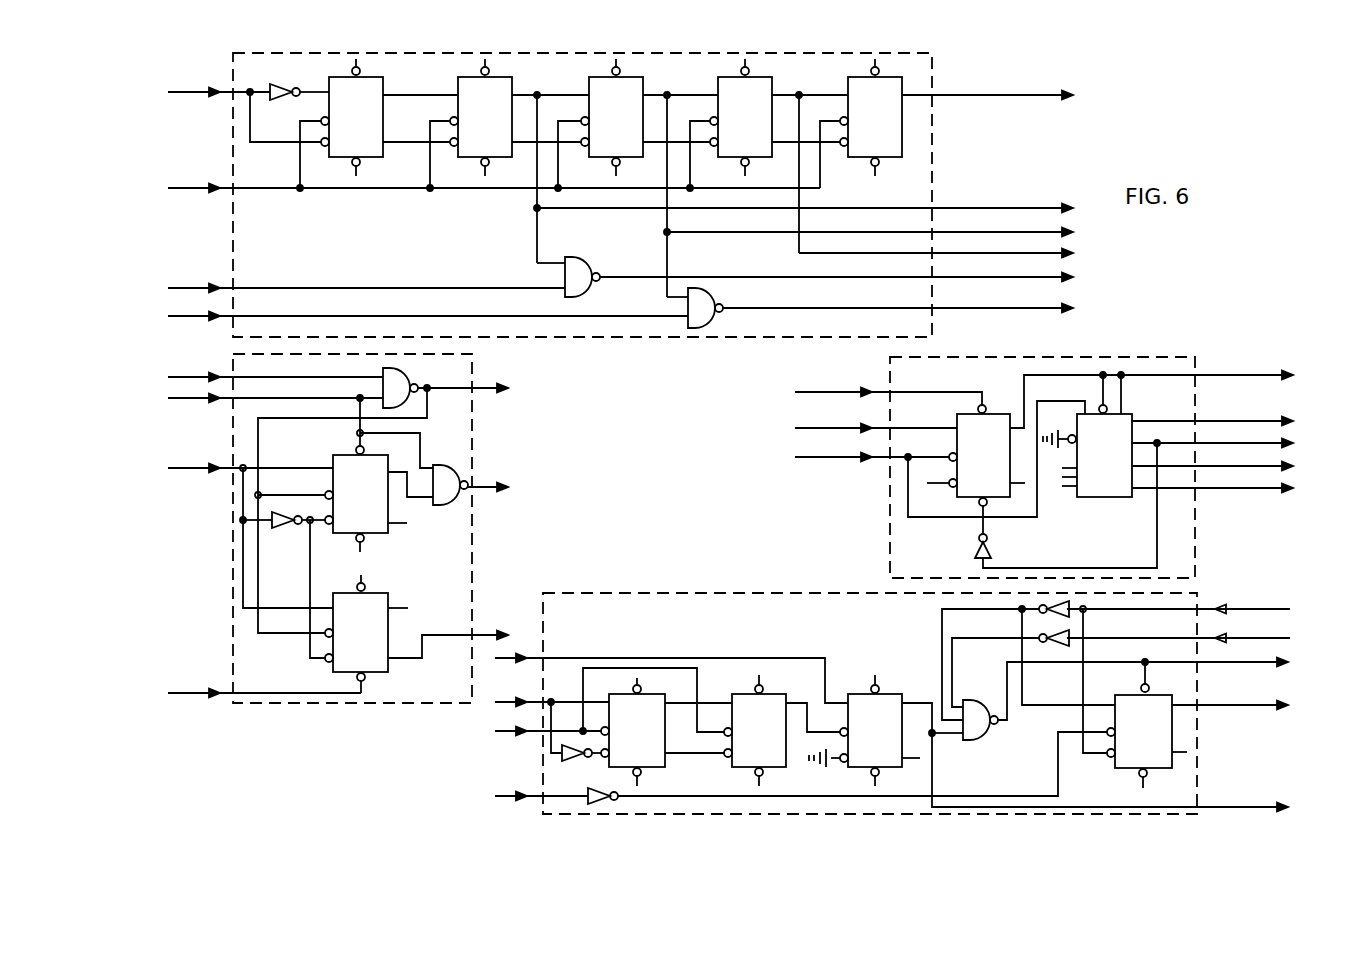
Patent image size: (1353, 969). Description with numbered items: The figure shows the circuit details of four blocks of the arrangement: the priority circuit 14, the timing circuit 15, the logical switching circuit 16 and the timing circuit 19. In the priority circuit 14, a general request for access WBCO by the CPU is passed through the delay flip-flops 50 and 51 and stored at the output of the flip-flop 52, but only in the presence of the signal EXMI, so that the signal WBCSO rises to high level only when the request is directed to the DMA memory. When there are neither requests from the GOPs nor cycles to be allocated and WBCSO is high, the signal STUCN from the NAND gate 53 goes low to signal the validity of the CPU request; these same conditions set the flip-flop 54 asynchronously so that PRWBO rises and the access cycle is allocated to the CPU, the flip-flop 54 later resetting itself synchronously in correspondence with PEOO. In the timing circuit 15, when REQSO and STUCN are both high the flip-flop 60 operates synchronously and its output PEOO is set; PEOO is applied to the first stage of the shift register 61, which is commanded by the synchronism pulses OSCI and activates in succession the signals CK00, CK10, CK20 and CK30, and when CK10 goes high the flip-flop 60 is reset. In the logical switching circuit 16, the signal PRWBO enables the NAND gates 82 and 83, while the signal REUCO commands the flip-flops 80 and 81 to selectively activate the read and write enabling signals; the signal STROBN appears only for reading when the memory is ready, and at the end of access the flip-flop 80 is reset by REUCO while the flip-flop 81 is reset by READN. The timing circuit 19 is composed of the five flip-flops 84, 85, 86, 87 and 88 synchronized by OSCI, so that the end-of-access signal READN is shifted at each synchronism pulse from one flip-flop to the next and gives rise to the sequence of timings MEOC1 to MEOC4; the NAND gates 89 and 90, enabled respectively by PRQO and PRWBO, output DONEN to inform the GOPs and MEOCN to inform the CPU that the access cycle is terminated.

The timing circuit 19 is at (918, 128).
The logical switching circuit 16 is at (457, 420).
The timing circuit 15 is at (1114, 363).
The priority circuit 14 is at (690, 615).
The delay flip-flop 50 is at (655, 758).
The delay flip-flop 51 is at (772, 758).
The flip-flop 52 is at (893, 758).
The NAND gate 53 is at (971, 733).
The flip-flop 54 is at (1160, 760).
The flip-flop 60 is at (955, 490).
The shift register 61 is at (1120, 488).
The flip-flop 80 is at (377, 522).
The flip-flop 81 is at (377, 662).
The NAND gate 82 is at (392, 384).
The NAND gate 83 is at (440, 484).
The flip-flop 84 is at (375, 148).
The flip-flop 85 is at (504, 148).
The flip-flop 86 is at (632, 148).
The flip-flop 87 is at (762, 148).
The flip-flop 88 is at (890, 148).
The NAND gate 89 is at (573, 273).
The NAND gate 90 is at (697, 305).